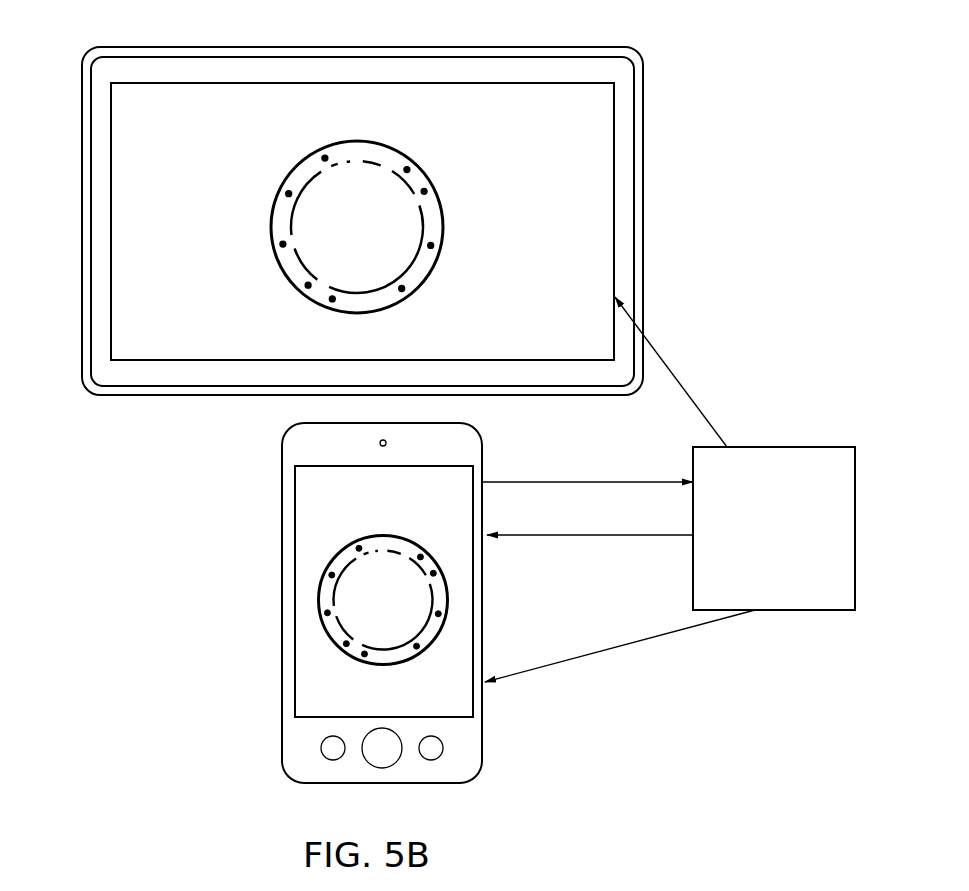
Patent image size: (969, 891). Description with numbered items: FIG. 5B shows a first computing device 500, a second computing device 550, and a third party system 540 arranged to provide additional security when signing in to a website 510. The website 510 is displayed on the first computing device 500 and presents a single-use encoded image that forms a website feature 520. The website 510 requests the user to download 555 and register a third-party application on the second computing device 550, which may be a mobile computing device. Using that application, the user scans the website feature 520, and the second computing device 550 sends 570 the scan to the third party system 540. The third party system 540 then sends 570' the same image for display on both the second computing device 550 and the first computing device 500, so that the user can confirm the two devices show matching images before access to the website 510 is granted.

The first computing device 500 is at (82, 278).
The website 510 is at (583, 212).
The website feature 520 is at (411, 215).
The third party system 540 is at (805, 445).
The second computing device 550 is at (443, 702).
The download 555 is at (622, 537).
The send 570 is at (587, 451).
The send 570' is at (636, 497).